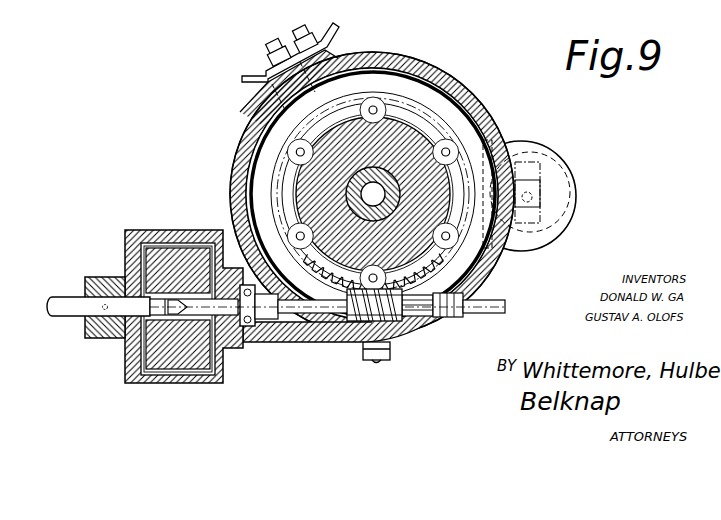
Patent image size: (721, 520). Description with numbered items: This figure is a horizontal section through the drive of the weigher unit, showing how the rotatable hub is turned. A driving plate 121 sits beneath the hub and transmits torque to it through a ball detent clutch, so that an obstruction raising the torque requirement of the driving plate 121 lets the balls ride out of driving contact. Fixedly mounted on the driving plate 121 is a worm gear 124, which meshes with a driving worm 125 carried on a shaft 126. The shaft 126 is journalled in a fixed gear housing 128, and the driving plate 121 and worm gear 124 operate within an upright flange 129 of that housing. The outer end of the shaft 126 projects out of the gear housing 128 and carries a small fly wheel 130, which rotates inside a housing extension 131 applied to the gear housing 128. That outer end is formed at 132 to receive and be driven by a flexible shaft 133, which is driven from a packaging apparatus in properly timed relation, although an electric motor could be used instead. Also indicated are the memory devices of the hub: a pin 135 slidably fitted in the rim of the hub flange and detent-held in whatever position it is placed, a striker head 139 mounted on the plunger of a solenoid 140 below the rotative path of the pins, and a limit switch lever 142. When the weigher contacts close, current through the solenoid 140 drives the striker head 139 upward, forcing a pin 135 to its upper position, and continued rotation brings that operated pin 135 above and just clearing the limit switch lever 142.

The driving plate 121 is at (384, 130).
The worm gear 124 is at (427, 117).
The driving worm 125 is at (368, 315).
The shaft 126 is at (297, 310).
The gear housing 128 is at (241, 151).
The upright flange 129 is at (318, 332).
The fly wheel 130 is at (165, 364).
The housing extension 131 is at (213, 383).
The formed end of shaft 132 is at (162, 311).
The flexible shaft 133 is at (62, 313).
The pin 135 is at (566, 178).
The striker head 139 is at (551, 163).
The solenoid 140 is at (573, 193).
The limit switch lever 142 is at (245, 80).